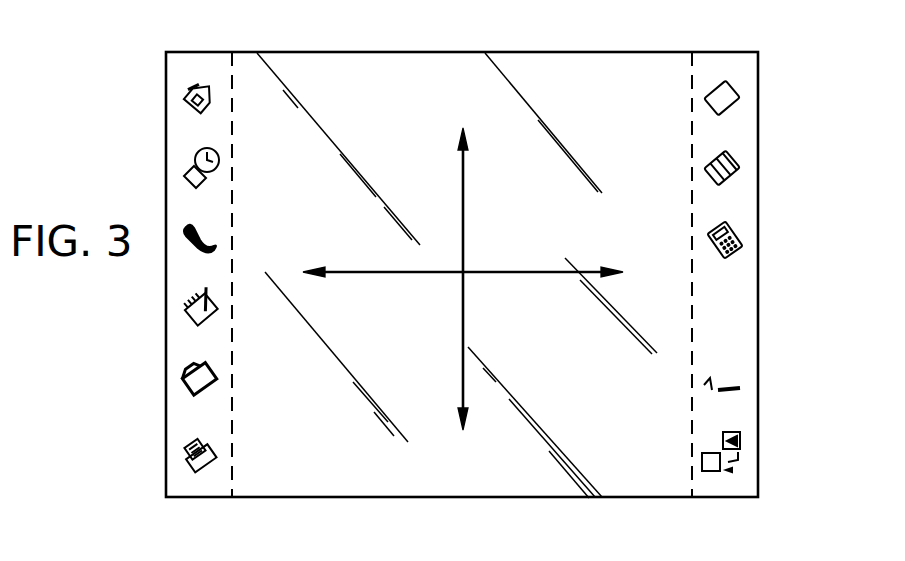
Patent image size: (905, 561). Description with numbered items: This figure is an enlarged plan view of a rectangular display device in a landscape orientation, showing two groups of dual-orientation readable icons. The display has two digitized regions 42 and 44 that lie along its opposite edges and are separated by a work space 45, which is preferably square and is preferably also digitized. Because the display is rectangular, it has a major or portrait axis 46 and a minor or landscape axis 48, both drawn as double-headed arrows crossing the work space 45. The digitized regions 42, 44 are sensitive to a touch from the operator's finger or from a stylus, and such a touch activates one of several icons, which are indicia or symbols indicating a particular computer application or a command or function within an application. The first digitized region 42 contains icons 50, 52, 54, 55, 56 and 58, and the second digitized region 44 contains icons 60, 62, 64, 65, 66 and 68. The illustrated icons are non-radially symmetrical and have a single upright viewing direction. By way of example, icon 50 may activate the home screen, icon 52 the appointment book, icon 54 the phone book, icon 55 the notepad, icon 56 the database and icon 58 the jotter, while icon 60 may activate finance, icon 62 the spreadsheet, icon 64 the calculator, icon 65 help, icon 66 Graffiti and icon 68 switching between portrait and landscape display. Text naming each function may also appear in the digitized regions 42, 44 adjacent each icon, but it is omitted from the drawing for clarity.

The digitized region 42 is at (173, 58).
The digitized region 44 is at (730, 60).
The work space 45 is at (373, 482).
The portrait axis 46 is at (512, 273).
The landscape axis 48 is at (464, 212).
The icon 50 is at (188, 91).
The icon 52 is at (188, 168).
The icon 54 is at (195, 248).
The icon 55 is at (192, 322).
The icon 56 is at (188, 388).
The icon 58 is at (188, 456).
The icon 60 is at (735, 96).
The icon 62 is at (735, 167).
The icon 64 is at (738, 232).
The icon 65 is at (735, 308).
The icon 66 is at (738, 385).
The icon 68 is at (740, 441).